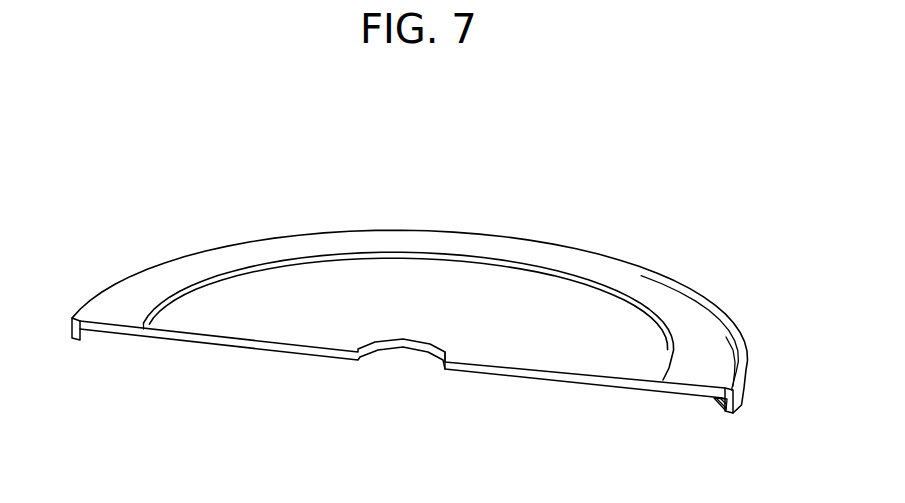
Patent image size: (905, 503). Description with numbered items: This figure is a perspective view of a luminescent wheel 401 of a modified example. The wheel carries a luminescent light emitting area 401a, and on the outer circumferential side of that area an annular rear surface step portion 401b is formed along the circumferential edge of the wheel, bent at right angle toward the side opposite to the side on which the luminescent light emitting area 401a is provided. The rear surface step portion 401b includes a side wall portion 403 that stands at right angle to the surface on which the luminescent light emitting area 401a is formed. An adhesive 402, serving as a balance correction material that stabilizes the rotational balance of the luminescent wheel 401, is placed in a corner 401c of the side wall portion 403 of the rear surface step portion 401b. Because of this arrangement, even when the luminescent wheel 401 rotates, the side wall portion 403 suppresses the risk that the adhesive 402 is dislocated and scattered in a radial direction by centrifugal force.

The luminescent wheel 401 is at (602, 250).
The luminescent light emitting area 401a is at (200, 273).
The rear surface step portion 401b is at (737, 414).
The corner 401c is at (75, 341).
The adhesive 402 is at (720, 403).
The side wall portion 403 is at (88, 335).